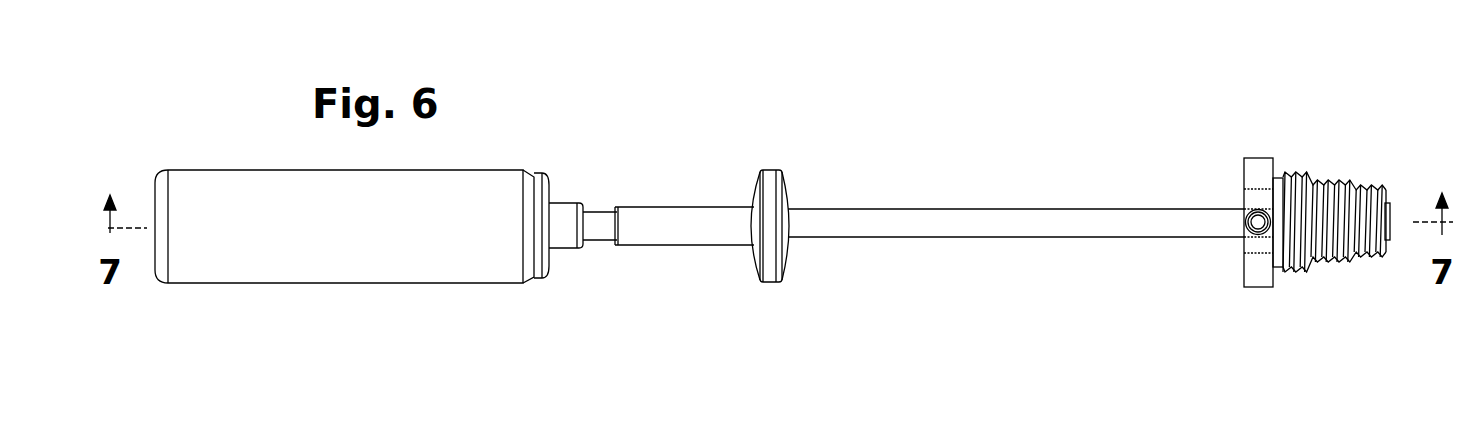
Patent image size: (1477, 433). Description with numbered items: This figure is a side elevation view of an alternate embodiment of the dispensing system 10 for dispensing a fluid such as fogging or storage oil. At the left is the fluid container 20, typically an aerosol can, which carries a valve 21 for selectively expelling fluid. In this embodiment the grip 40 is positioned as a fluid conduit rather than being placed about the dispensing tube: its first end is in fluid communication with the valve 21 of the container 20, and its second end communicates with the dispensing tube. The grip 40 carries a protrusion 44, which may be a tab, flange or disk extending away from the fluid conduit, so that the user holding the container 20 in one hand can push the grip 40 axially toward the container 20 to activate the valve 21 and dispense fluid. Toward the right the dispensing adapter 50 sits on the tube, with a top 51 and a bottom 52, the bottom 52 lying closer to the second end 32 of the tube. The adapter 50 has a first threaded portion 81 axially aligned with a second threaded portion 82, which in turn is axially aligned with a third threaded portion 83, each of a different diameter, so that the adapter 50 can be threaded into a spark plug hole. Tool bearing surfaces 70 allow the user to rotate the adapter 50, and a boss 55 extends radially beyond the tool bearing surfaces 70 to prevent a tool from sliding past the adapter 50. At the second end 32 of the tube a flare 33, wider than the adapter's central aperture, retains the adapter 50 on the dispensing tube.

The dispensing system 10 is at (493, 114).
The fluid container 20 is at (253, 183).
The valve 21 is at (598, 209).
The grip 40 is at (692, 190).
The protrusion 44 is at (782, 260).
The dispensing adapter 50 is at (1322, 250).
The top 51 is at (1233, 248).
The bottom 52 is at (1384, 198).
The boss 55 is at (1246, 218).
The tool bearing surfaces 70 is at (1262, 161).
The first threaded portion 81 is at (1363, 257).
The second threaded portion 82 is at (1343, 267).
The third threaded portion 83 is at (1303, 272).
The second end 32 is at (1394, 247).
The flare 33 is at (1389, 213).